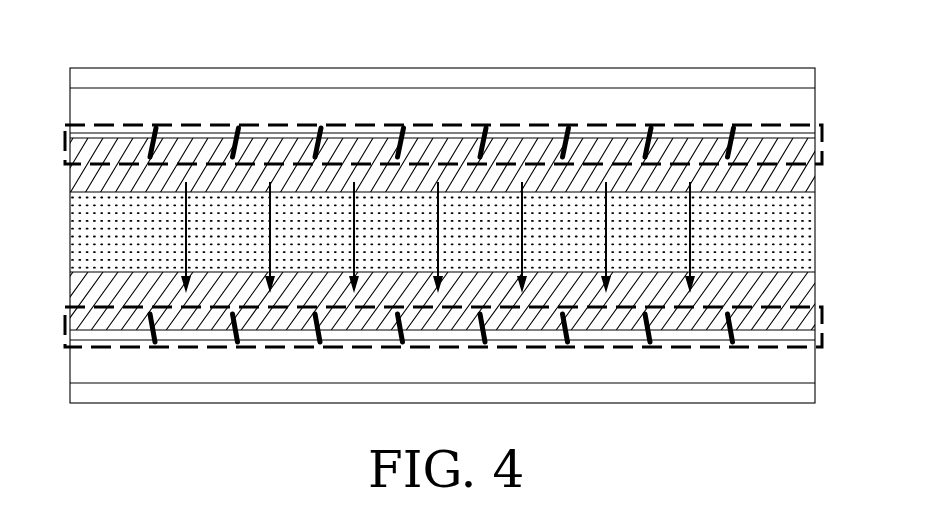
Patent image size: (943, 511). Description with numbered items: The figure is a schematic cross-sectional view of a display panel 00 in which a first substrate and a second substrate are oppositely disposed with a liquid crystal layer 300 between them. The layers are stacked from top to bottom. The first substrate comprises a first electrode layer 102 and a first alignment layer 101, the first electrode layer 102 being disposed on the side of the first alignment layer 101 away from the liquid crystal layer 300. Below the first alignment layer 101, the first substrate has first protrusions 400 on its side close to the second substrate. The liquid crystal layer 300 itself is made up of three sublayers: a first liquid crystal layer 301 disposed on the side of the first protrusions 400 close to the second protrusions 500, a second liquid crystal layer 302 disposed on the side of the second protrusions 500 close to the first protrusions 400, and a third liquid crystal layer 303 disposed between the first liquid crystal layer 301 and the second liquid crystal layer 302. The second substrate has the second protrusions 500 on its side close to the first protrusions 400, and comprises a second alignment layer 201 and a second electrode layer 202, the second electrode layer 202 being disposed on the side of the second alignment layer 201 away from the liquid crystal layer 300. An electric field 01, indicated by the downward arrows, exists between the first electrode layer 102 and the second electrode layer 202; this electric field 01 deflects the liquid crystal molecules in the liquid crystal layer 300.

The display panel 00 is at (115, 75).
The electric field 01 is at (187, 242).
The first electrode layer 102 is at (815, 77).
The first alignment layer 101 is at (815, 113).
The first protrusions 400 is at (822, 148).
The liquid crystal layer 300 is at (870, 172).
The first liquid crystal layer 301 is at (800, 177).
The third liquid crystal layer 303 is at (795, 237).
The second liquid crystal layer 302 is at (800, 297).
The second protrusions 500 is at (822, 327).
The second alignment layer 201 is at (815, 365).
The second electrode layer 202 is at (815, 395).